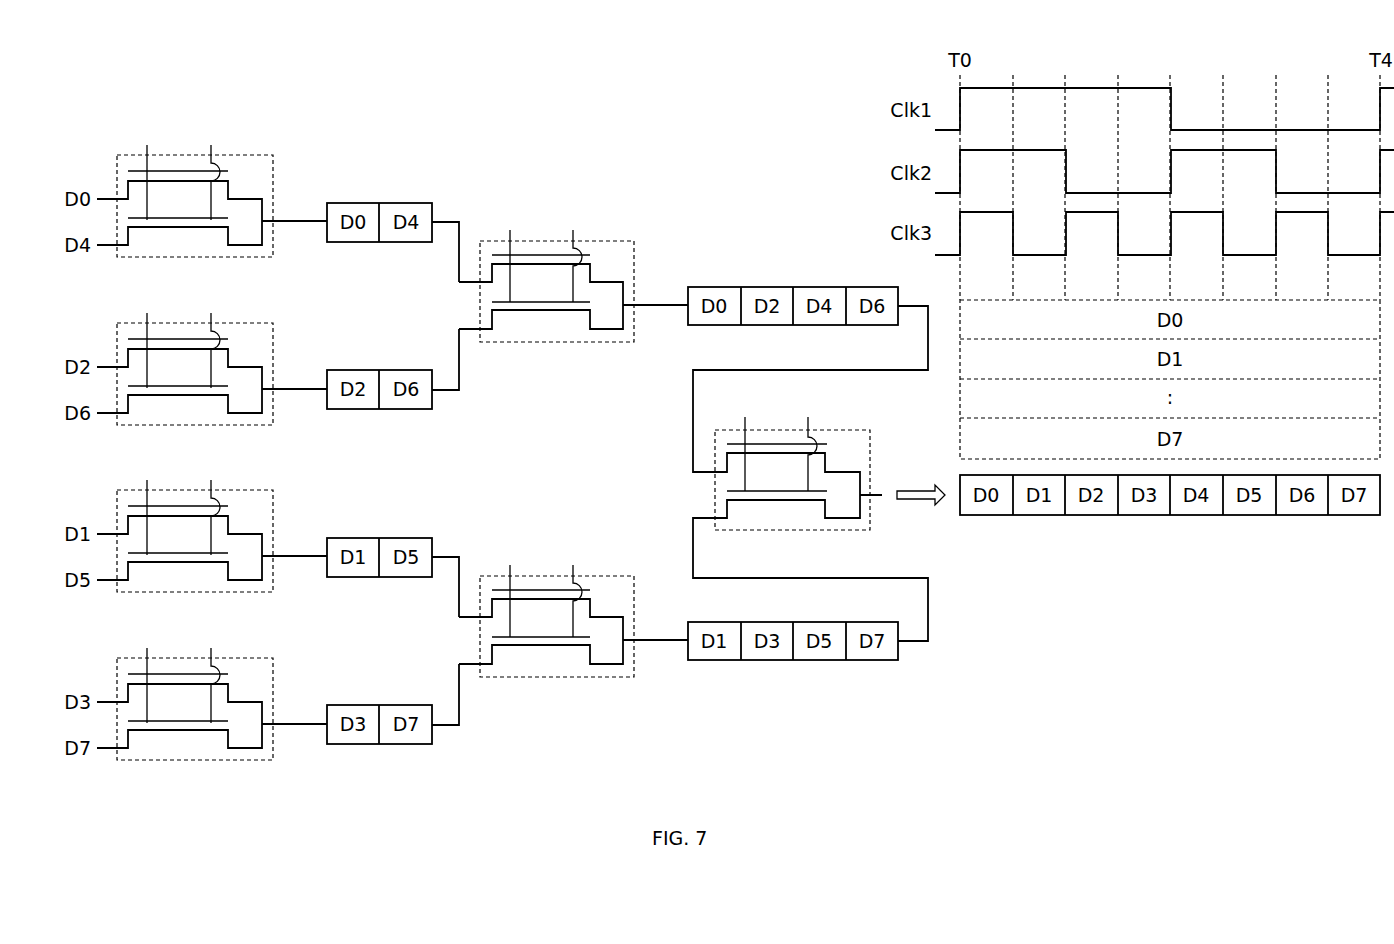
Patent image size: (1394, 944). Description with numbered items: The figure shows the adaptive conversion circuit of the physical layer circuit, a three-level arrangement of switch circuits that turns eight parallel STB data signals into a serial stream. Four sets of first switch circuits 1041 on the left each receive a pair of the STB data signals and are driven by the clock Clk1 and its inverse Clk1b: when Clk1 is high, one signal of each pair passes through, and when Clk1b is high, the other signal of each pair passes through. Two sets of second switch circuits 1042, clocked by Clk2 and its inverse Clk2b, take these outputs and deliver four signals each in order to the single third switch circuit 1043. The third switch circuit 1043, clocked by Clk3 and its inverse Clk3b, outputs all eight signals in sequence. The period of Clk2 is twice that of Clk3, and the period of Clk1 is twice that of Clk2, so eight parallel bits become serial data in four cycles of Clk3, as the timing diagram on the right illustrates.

The first switch circuit 1041 is at (274, 172).
The second switch circuit 1042 is at (636, 258).
The third switch circuit 1043 is at (872, 446).